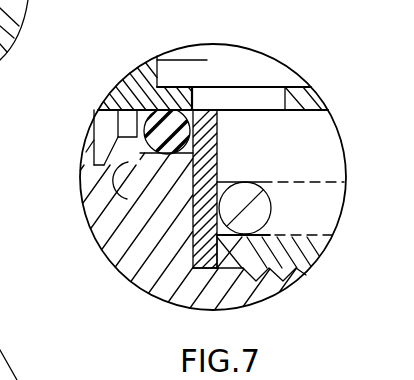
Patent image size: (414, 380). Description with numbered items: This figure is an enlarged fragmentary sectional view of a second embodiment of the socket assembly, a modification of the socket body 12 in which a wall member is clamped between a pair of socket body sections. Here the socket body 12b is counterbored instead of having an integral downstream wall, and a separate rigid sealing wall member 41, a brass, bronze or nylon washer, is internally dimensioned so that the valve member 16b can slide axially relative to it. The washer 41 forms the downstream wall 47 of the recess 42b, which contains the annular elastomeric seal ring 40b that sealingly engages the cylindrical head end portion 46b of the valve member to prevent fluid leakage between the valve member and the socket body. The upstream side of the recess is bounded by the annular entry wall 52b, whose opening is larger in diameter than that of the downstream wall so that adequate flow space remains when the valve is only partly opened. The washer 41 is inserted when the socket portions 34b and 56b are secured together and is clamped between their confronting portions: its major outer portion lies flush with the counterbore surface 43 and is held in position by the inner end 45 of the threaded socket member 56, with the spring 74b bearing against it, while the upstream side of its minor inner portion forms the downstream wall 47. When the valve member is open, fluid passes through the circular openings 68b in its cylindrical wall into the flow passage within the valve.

The socket body 12 is at (0, 122).
The socket body 12b is at (84, 235).
The valve member 16b is at (303, 110).
The base section 34b is at (143, 277).
The seal ring 40b is at (190, 170).
The sealing wall member 41 is at (175, 224).
The recess 42b is at (218, 144).
The counterbore surface 43 is at (176, 196).
The inner end 45 is at (233, 250).
The head end portion 46b is at (127, 84).
The downstream wall 47 is at (193, 88).
The entry wall 52b is at (130, 130).
The threaded socket member 56 is at (20, 20).
The socket portion 56b is at (308, 262).
The circular openings 68b is at (225, 99).
The spring 74b is at (272, 207).